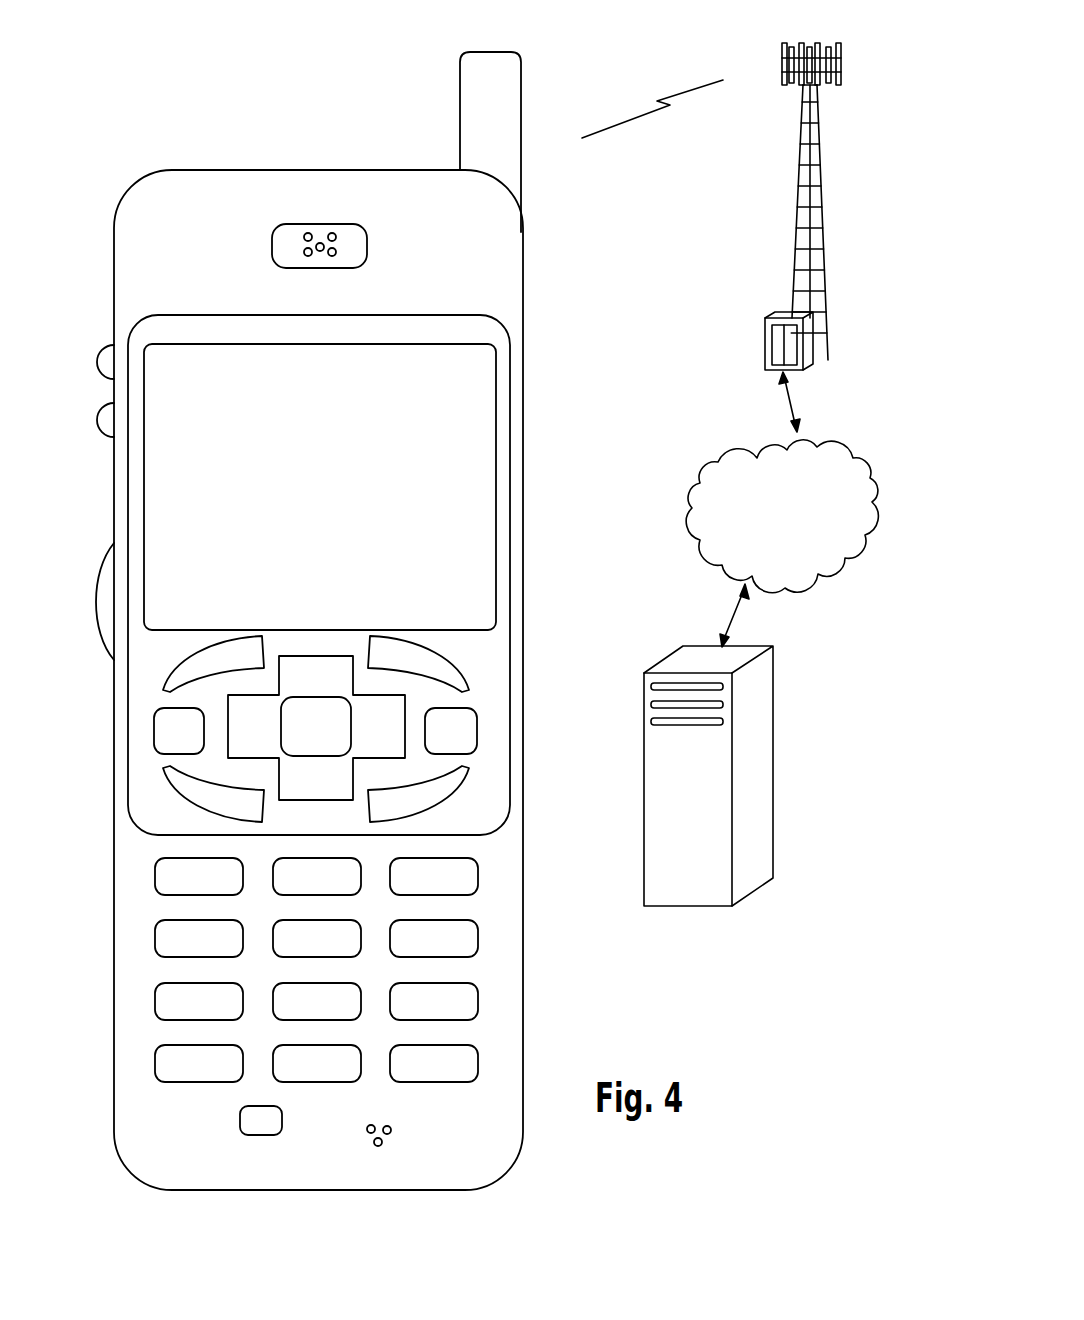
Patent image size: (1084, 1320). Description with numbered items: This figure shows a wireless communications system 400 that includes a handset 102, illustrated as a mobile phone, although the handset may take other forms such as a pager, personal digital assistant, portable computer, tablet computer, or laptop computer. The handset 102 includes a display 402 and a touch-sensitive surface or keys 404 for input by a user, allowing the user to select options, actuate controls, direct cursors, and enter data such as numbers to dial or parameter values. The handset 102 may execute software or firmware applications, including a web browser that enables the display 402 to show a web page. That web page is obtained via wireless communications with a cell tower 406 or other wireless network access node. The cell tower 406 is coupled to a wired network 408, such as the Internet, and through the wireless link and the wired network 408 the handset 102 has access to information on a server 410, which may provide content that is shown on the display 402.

The wireless communications system 400 is at (308, 158).
The handset 102 is at (145, 1176).
The display 402 is at (508, 352).
The keys 404 is at (536, 647).
The cell tower 406 is at (797, 221).
The wired network 408 is at (713, 557).
The server 410 is at (689, 907).